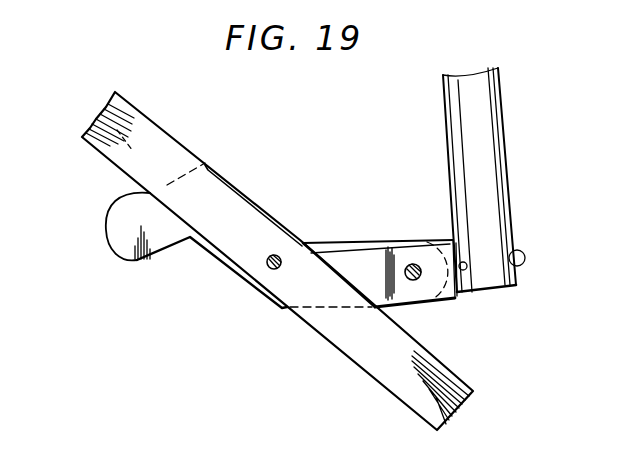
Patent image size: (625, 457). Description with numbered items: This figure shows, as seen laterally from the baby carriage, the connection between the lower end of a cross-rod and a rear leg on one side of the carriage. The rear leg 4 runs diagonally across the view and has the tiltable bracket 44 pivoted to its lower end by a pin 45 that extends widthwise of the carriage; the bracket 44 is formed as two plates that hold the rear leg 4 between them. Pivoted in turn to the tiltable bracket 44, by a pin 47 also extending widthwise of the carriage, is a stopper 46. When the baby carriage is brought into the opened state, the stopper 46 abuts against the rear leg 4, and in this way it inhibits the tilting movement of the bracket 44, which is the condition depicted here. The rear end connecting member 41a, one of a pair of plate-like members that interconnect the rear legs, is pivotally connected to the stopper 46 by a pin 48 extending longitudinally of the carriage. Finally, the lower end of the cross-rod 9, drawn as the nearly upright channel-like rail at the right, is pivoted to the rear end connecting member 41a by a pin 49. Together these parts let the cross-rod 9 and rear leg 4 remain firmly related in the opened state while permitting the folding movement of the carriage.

The rear leg 4 is at (378, 375).
The cross-rod 9 is at (510, 157).
The rear end connecting member 41a is at (465, 298).
The tiltable bracket 44 is at (313, 243).
The pin 45 is at (267, 267).
The stopper 46 is at (365, 262).
The pin 47 is at (414, 263).
The pin 48 is at (466, 268).
The pin 49 is at (524, 252).